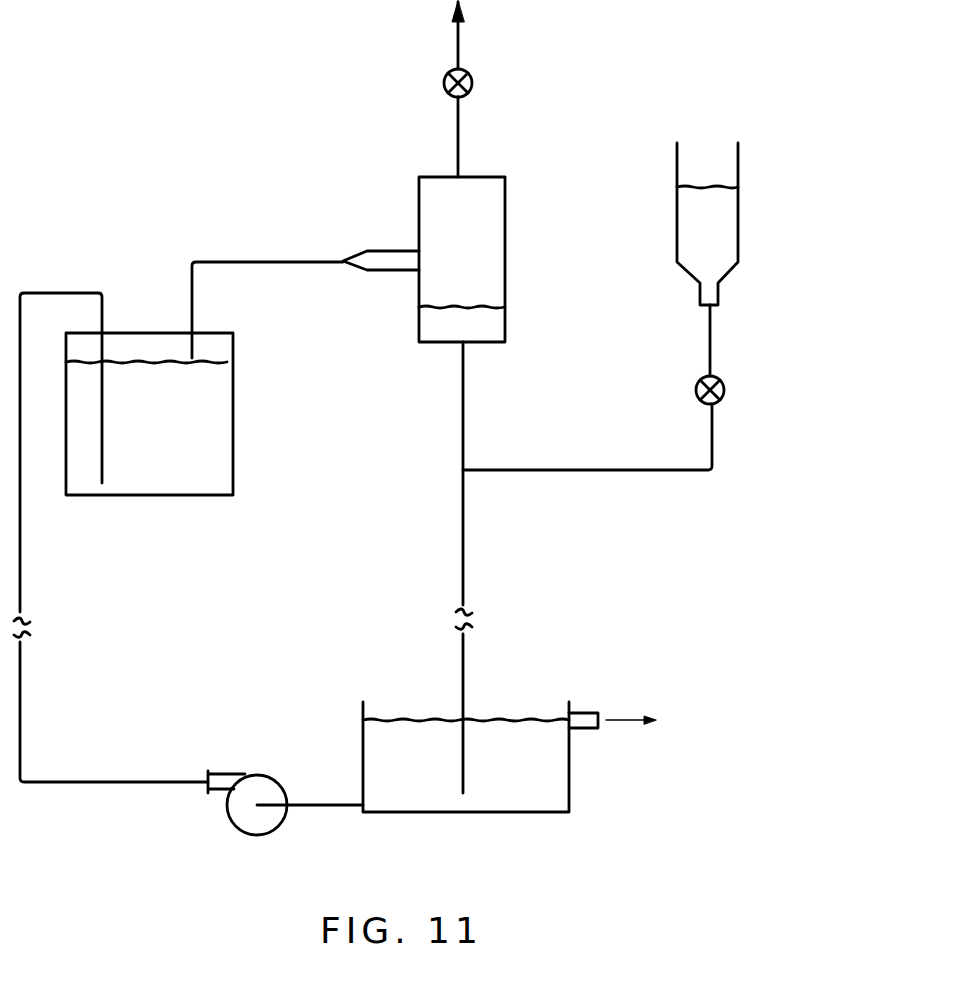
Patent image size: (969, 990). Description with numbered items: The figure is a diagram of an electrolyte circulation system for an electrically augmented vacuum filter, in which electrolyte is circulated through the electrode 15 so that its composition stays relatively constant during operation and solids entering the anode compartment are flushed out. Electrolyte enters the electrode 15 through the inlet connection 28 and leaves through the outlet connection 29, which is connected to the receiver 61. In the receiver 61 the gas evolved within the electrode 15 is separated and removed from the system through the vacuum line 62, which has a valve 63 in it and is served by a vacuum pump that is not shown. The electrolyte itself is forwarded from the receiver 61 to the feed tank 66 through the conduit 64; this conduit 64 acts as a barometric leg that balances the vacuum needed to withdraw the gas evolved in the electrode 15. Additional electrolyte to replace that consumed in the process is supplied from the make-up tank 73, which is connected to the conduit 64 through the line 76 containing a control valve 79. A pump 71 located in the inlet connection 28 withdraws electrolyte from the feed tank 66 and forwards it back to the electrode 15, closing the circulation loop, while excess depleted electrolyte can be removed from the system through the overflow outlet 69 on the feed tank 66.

The electrode 15 is at (233, 380).
The inlet connection 28 is at (23, 703).
The outlet connection 29 is at (250, 261).
The receiver 61 is at (505, 228).
The vacuum line 62 is at (458, 124).
The valve 63 is at (472, 78).
The conduit 64 is at (463, 553).
The feed tank 66 is at (569, 768).
The overflow outlet 69 is at (588, 719).
The pump 71 is at (262, 783).
The make-up tank 73 is at (677, 153).
The line 76 is at (620, 472).
The control valve 79 is at (724, 381).